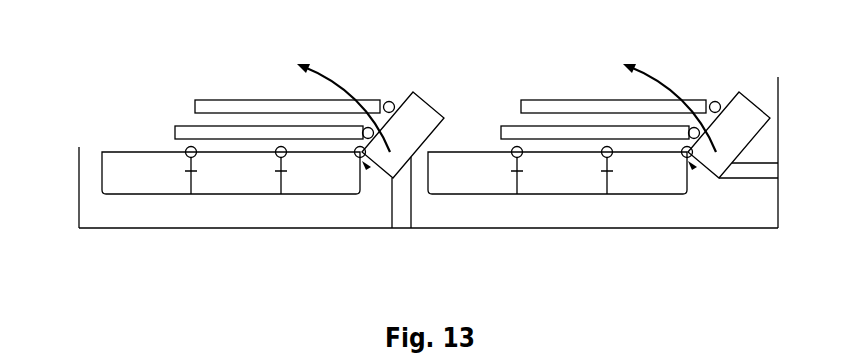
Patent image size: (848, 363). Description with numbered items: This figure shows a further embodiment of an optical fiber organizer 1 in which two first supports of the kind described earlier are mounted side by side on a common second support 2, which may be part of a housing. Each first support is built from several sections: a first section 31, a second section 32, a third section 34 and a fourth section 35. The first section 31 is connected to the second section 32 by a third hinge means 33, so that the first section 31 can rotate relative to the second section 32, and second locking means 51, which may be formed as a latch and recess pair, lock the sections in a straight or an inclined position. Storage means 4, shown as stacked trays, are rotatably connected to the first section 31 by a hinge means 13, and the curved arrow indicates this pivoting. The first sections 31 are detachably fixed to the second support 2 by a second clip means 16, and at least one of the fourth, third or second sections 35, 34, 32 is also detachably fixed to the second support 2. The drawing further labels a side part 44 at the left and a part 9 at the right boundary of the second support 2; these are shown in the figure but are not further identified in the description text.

The sorting device 1 is at (477, 52).
The second support 2 is at (428, 256).
The storage means 4 is at (193, 90).
The frame wall 9 is at (779, 137).
The hinge means 13 is at (365, 127).
The second clip means 16 is at (405, 210).
The first section 31 is at (420, 106).
The second section 32 is at (317, 174).
The third hinge means 33 is at (185, 149).
The third section 34 is at (238, 176).
The fourth section 35 is at (148, 175).
The side wall 44 is at (78, 177).
The second locking means 51 is at (193, 172).